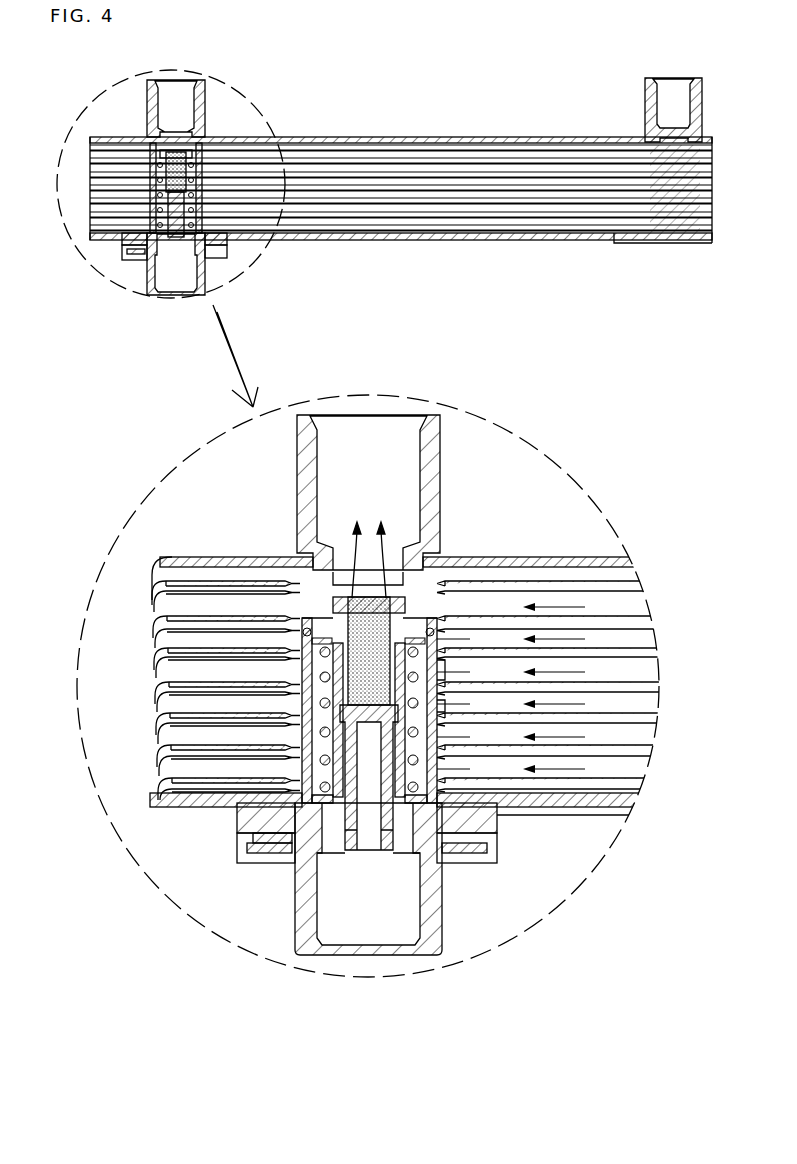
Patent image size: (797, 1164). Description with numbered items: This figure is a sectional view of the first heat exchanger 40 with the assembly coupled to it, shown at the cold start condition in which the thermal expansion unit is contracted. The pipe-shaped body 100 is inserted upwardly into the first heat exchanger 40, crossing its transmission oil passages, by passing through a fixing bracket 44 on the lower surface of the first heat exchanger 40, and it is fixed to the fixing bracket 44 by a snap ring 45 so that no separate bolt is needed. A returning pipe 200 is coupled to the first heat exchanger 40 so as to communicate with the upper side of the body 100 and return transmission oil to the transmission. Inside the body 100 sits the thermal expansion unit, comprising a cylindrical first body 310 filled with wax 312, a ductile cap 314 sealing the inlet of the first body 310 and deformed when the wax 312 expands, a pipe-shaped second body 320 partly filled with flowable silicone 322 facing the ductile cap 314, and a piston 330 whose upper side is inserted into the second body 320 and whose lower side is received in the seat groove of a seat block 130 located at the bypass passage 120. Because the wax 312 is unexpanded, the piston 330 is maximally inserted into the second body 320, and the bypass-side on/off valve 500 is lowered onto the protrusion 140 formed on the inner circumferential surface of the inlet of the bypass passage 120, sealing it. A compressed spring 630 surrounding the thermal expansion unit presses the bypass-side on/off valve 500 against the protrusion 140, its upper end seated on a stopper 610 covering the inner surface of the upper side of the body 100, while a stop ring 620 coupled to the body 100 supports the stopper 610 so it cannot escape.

The first heat exchanger 40 is at (418, 137).
The fixing bracket 44 is at (117, 240).
The snap ring 45 is at (263, 850).
The body 100 is at (577, 760).
The bypass passage 120 is at (203, 273).
The seat block 130 is at (317, 857).
The protrusion 140 is at (500, 843).
The returning pipe 200 is at (195, 76).
The first body 310 is at (343, 650).
The wax 312 is at (322, 565).
The ductile cap 314 is at (440, 670).
The second body 320 is at (337, 690).
The flowable silicone 322 is at (440, 703).
The piston 330 is at (363, 830).
The bypass-side on/off valve 500 is at (367, 707).
The stopper 610 is at (305, 645).
The stop ring 620 is at (318, 625).
The spring 630 is at (312, 752).